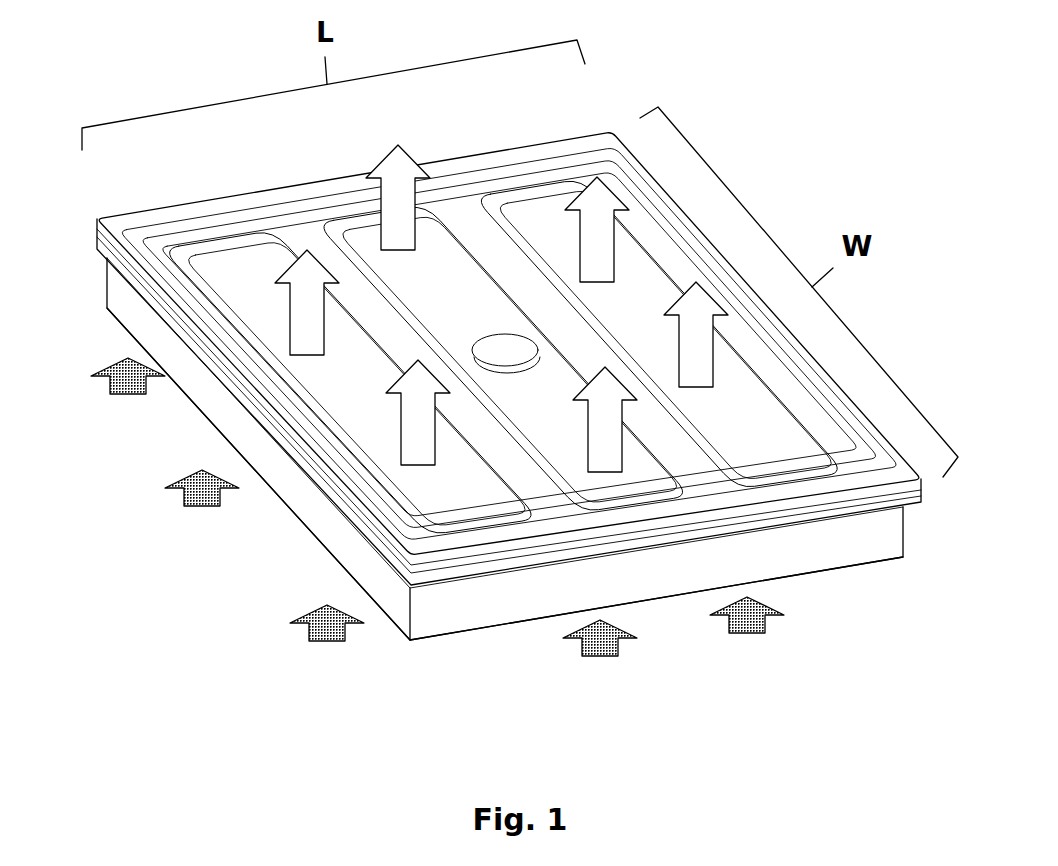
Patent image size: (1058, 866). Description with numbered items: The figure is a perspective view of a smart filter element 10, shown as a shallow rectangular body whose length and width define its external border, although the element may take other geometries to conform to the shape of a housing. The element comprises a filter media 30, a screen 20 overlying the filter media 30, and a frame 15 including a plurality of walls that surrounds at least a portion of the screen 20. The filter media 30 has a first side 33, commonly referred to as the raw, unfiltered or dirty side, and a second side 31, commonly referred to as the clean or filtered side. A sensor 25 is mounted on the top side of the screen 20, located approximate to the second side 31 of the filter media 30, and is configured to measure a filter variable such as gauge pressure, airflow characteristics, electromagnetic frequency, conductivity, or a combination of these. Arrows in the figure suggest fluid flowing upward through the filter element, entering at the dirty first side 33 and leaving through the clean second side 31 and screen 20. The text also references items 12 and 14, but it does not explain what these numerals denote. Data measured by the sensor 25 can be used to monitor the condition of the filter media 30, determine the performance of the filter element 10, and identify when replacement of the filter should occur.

The smart filter element 10 is at (728, 118).
The inlet air flow 12 is at (126, 392).
The outlet air flow 14 is at (310, 273).
The frame 15 is at (96, 222).
The screen 20 is at (755, 457).
The sensor 25 is at (510, 360).
The filter media 30 is at (300, 497).
The second side 31 is at (637, 547).
The first side 33 is at (480, 628).